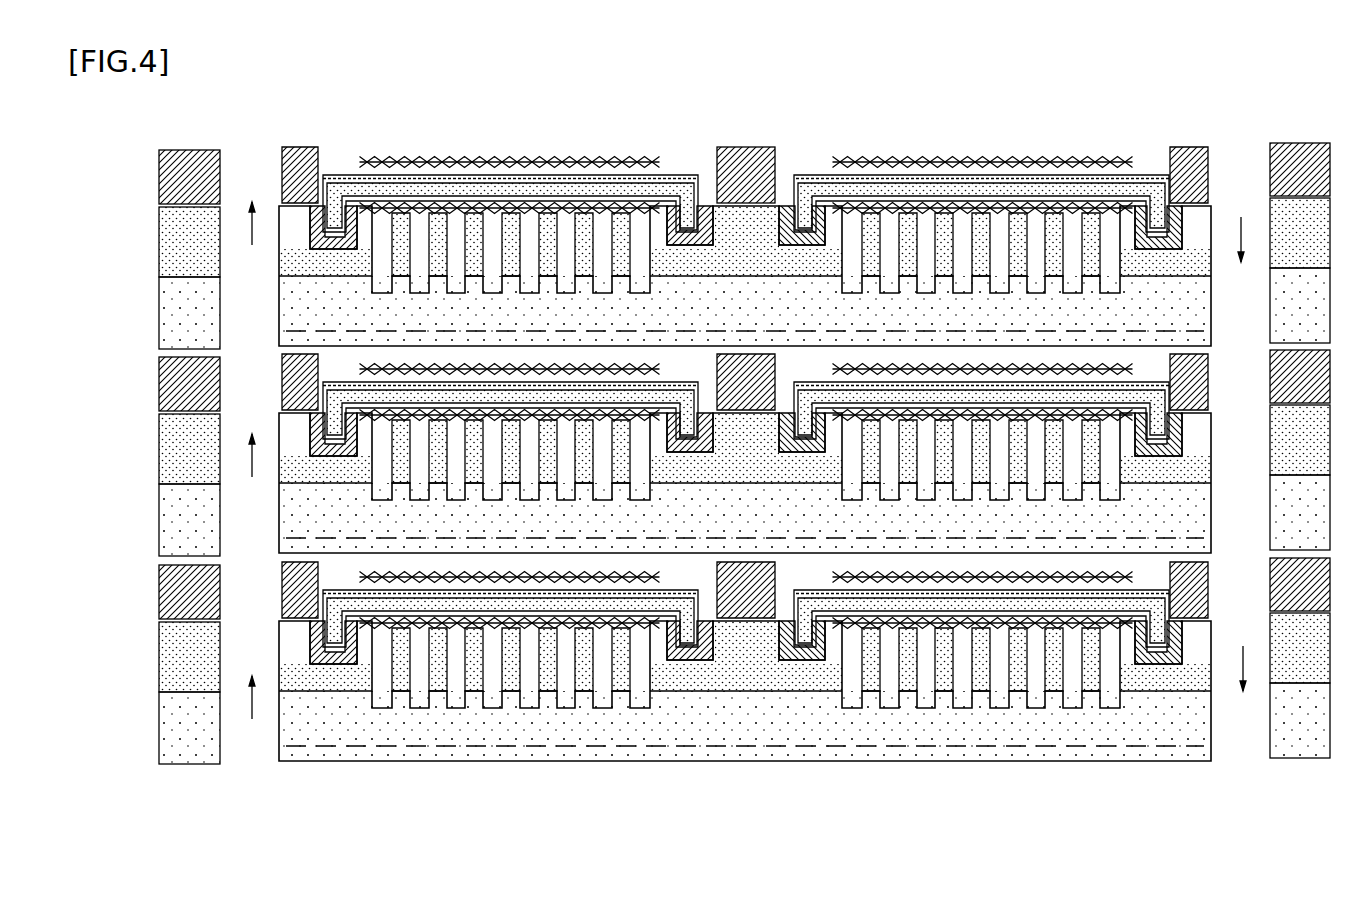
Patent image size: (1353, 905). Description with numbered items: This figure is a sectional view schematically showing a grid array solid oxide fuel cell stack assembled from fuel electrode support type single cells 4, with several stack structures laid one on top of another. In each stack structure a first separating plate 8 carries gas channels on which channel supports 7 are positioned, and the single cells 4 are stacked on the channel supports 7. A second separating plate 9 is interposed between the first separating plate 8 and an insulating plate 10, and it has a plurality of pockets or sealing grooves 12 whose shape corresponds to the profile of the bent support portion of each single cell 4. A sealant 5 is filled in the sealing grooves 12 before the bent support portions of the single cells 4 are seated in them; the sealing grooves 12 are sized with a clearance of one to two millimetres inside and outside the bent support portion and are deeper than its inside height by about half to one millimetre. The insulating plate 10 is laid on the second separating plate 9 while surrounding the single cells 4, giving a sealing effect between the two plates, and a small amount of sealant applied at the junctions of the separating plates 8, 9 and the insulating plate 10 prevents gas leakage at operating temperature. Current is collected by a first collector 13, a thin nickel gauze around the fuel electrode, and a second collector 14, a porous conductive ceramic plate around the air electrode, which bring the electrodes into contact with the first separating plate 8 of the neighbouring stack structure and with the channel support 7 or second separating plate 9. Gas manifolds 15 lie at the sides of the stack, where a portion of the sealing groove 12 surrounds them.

The single cell 4 is at (458, 186).
The sealant 5 is at (712, 202).
The channel support 7 is at (547, 220).
The first separating plate 8 is at (173, 311).
The second separating plate 9 is at (175, 237).
The insulating plate 10 is at (172, 178).
The sealing groove 12 is at (716, 241).
The first collector 13 is at (500, 205).
The second collector 14 is at (407, 157).
The gas manifold 15 is at (247, 742).